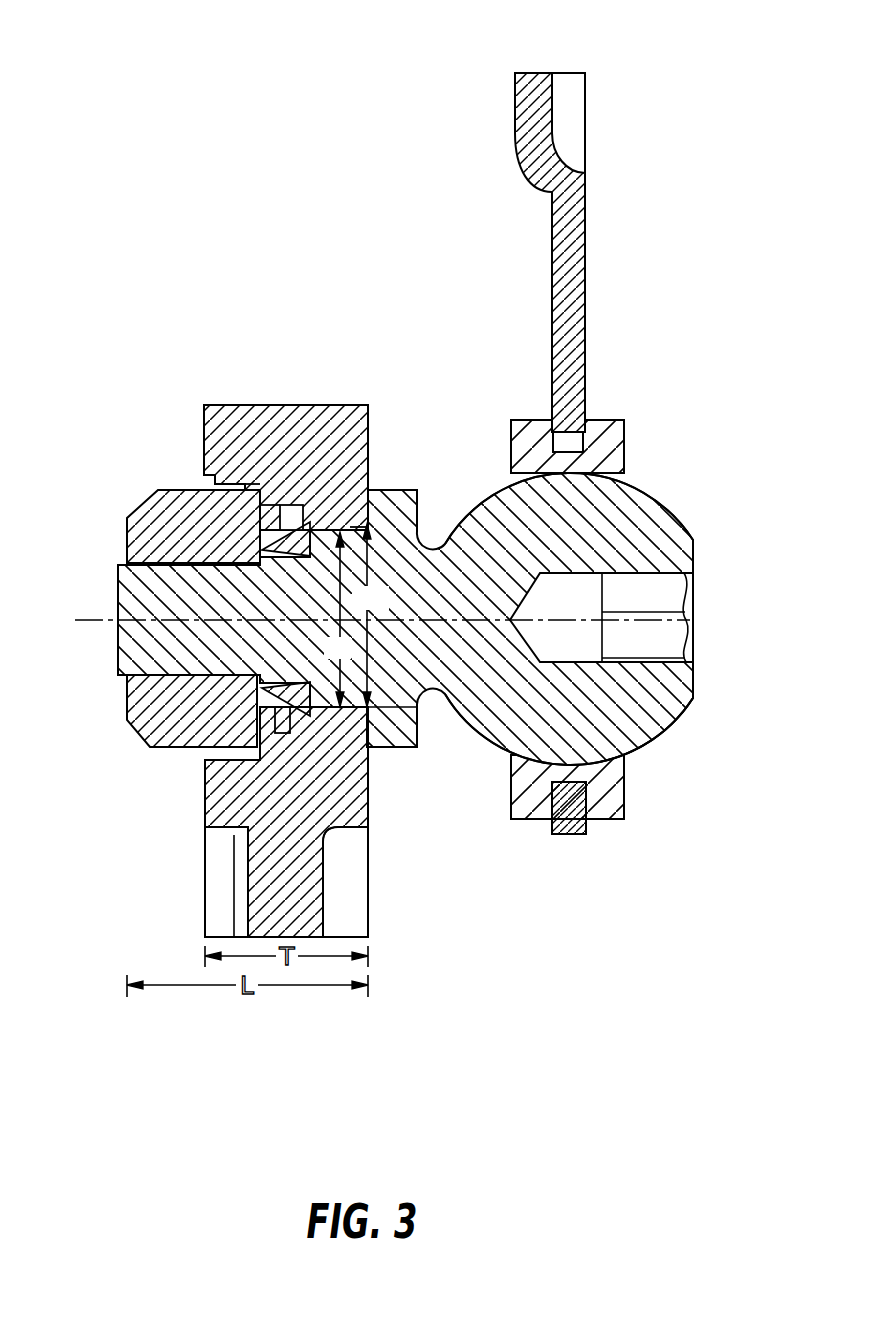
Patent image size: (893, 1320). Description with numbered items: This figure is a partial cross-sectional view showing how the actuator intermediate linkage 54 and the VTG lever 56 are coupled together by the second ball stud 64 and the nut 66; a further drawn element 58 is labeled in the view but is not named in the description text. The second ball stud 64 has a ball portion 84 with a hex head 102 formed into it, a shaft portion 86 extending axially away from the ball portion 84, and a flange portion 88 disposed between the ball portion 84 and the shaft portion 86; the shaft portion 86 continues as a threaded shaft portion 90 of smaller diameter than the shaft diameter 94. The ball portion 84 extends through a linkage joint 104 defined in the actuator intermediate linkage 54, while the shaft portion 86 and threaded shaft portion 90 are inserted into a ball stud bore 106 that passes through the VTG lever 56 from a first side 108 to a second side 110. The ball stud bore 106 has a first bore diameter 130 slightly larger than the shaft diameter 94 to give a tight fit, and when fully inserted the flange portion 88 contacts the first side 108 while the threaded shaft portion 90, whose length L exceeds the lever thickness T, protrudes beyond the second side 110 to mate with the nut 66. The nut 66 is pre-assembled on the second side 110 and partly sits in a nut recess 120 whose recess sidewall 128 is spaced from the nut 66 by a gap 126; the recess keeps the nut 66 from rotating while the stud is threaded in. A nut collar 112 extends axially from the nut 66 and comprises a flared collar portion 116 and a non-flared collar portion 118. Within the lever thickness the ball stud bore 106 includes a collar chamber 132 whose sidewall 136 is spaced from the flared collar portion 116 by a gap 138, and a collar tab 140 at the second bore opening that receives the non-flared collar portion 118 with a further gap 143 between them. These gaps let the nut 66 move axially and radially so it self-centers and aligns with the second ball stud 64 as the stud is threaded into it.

The actuator intermediate linkage 54 is at (532, 80).
The VTG lever 56 is at (195, 246).
The upper retainer nut 58 is at (205, 405).
The second ball stud 64 is at (668, 527).
The nut 66 is at (163, 500).
The ball portion 84 is at (668, 710).
The shaft portion 86 is at (340, 530).
The flange portion 88 is at (407, 510).
The threaded shaft portion 90 is at (160, 662).
The shaft diameter 94 is at (337, 619).
The hex head 102 is at (677, 590).
The linkage joint 104 is at (617, 482).
The ball stud bore 106 is at (352, 523).
The first side 108 is at (368, 803).
The second side 110 is at (205, 790).
The nut collar 112 is at (340, 830).
The flared collar portion 116 is at (300, 530).
The non-flared collar portion 118 is at (288, 407).
The nut recess 120 is at (215, 757).
The gap 126 is at (245, 480).
The recess sidewall 128 is at (264, 500).
The first bore diameter 130 is at (370, 615).
The collar chamber 132 is at (313, 717).
The sidewall 136 is at (247, 832).
The gap 138 is at (318, 720).
The collar tab 140 is at (270, 518).
The gap 143 is at (285, 778).